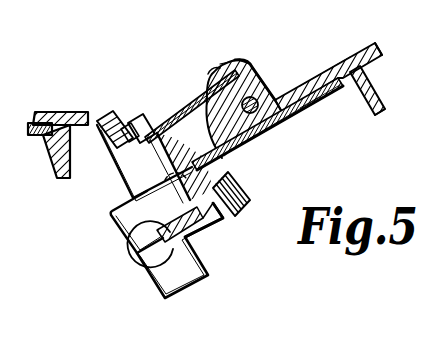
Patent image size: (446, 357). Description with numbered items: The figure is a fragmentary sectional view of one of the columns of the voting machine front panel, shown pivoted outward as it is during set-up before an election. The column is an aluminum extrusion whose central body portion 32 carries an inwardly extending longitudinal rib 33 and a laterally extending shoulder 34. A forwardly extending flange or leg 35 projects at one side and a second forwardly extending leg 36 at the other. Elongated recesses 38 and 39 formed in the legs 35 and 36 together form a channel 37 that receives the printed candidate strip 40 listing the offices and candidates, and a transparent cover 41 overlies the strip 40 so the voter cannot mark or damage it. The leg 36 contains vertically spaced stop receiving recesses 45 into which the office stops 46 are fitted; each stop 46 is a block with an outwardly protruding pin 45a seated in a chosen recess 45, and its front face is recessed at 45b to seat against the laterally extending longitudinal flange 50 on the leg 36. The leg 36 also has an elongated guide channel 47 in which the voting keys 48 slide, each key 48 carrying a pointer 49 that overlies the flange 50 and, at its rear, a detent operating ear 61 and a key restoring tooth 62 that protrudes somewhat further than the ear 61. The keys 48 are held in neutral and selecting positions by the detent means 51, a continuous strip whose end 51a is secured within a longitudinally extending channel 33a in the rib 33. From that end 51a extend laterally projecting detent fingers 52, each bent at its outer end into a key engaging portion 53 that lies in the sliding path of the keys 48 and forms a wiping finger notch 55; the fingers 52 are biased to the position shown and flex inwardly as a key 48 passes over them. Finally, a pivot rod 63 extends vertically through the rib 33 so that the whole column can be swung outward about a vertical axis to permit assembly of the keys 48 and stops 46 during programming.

The central body portion 32 is at (50, 110).
The longitudinal rib 33 is at (262, 64).
The channel 33a is at (238, 58).
The shoulder 34 is at (374, 28).
The flange or leg 35 is at (372, 80).
The second leg 36 is at (187, 154).
The channel 37 is at (333, 72).
The recess 38 is at (355, 100).
The recess 39 is at (214, 164).
The candidate strip 40 is at (275, 122).
The transparent cover 41 is at (322, 102).
The stop receiving recesses 45 is at (167, 181).
The pin 45a is at (192, 238).
The recess 45b is at (133, 238).
The office stop 46 is at (124, 207).
The guide channel 47 is at (216, 238).
The voting key 48 is at (208, 263).
The pointer 49 is at (240, 188).
The flange 50 is at (151, 273).
The detent means 51 is at (173, 116).
The end 51a is at (214, 68).
The detent finger 52 is at (191, 104).
The key engaging portion 53 is at (135, 126).
The wiping finger notch 55 is at (126, 130).
The detent operating ear 61 is at (113, 152).
The key restoring tooth 62 is at (103, 118).
The pivot rod 63 is at (255, 70).